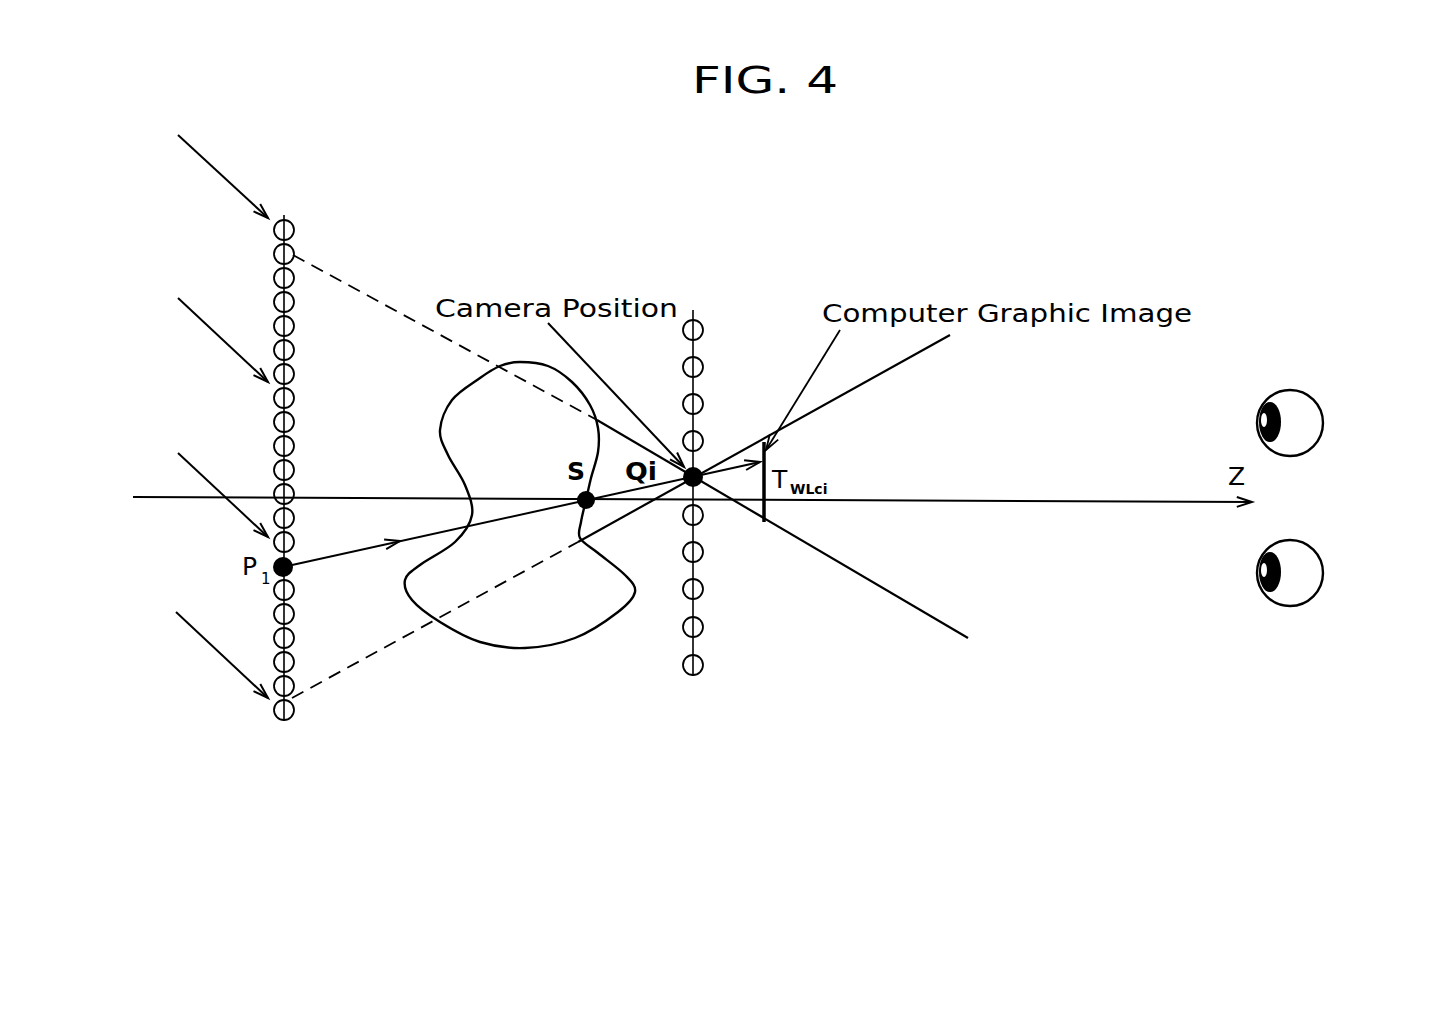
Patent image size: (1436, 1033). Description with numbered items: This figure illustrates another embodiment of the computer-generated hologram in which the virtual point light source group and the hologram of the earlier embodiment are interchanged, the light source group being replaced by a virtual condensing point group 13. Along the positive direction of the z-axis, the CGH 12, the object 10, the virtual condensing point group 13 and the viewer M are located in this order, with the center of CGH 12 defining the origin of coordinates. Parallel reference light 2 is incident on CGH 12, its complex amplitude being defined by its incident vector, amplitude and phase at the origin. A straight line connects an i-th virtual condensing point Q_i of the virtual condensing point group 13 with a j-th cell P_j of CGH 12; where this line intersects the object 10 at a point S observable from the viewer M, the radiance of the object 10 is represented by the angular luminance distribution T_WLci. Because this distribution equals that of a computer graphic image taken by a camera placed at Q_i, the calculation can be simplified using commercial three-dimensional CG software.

The reference light 2 is at (228, 178).
The object 10 is at (520, 522).
The CGH 12 is at (324, 487).
The virtual condensing point group 13 is at (942, 515).
The viewer M is at (1333, 522).